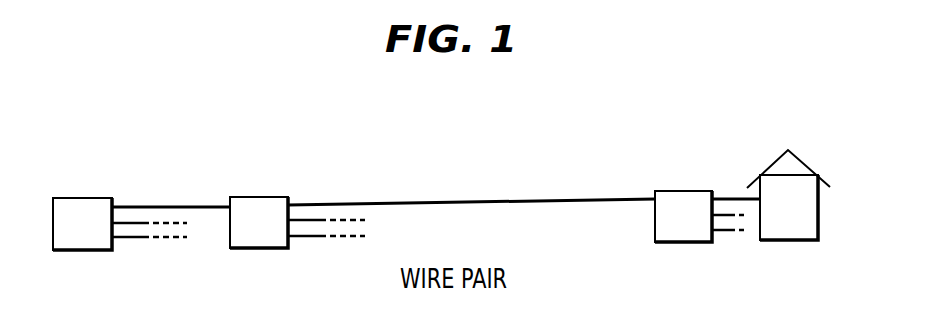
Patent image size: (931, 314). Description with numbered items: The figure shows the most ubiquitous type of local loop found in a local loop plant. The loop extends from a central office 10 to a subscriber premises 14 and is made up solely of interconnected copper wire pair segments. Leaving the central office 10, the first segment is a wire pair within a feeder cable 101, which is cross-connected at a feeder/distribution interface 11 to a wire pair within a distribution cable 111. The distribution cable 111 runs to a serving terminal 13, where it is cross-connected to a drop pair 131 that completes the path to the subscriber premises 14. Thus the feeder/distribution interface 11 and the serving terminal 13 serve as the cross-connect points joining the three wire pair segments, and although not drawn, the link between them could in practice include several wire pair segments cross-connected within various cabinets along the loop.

The central office 10 is at (80, 198).
The feeder cable 101 is at (177, 205).
The feeder/distribution interface 11 is at (252, 197).
The distribution cable 111 is at (360, 205).
The serving terminal 13 is at (690, 191).
The drop pair 131 is at (735, 195).
The subscriber premises 14 is at (812, 168).